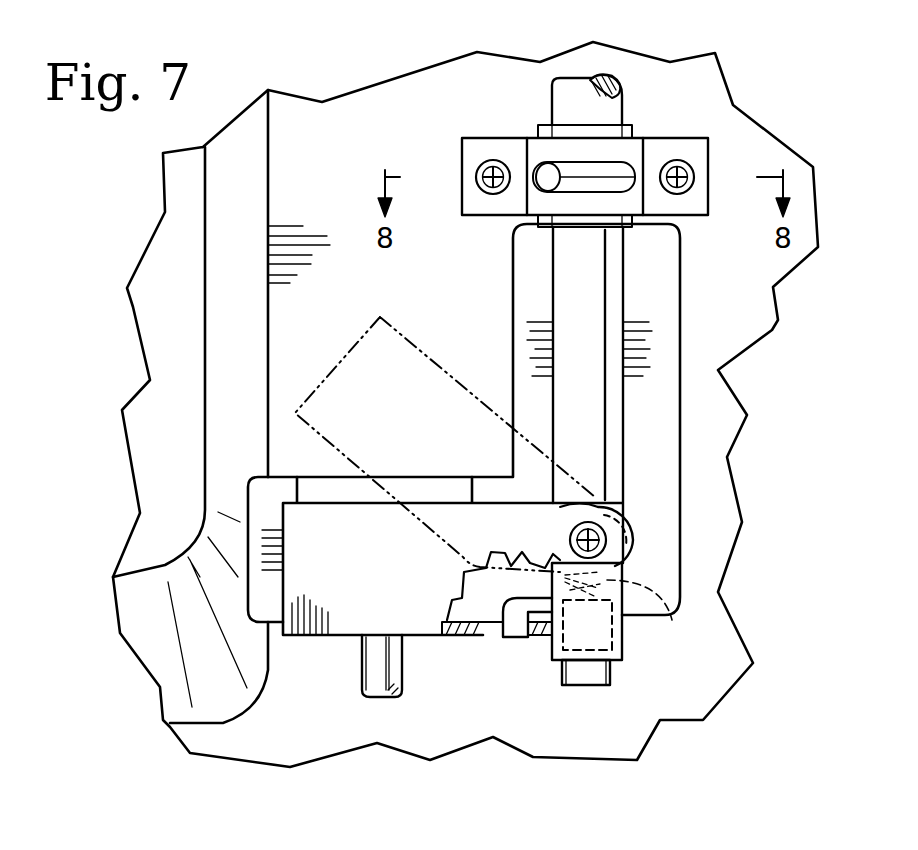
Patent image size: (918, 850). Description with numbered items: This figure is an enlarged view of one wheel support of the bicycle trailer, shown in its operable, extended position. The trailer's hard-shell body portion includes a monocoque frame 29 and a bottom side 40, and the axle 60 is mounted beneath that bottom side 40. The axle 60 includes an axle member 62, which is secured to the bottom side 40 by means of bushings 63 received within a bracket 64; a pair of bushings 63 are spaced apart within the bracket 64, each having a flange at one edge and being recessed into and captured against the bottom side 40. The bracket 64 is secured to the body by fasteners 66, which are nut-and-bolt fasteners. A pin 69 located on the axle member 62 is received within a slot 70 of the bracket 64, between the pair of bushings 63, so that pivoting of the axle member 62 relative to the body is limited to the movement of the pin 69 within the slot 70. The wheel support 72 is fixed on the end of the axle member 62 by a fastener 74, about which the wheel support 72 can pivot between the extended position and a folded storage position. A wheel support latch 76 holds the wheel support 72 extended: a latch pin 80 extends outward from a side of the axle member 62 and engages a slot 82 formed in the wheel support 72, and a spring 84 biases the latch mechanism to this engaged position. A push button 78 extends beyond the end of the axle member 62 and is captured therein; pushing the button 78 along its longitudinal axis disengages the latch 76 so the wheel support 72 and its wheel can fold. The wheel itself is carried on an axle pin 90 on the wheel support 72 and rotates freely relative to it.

The monocoque frame 29 is at (775, 300).
The bottom side 40 is at (337, 152).
The axle 60 is at (607, 144).
The axle member 62 is at (602, 78).
The bushings 63 is at (630, 132).
The bracket 64 is at (690, 156).
The fasteners 66 is at (490, 195).
The pin 69 is at (540, 176).
The slot 70 is at (600, 188).
The wheel support 72 is at (352, 588).
The fastener 74 is at (602, 525).
The wheel support latch 76 is at (636, 676).
The push button 78 is at (587, 687).
The latch pin 80 is at (523, 640).
The slot 82 is at (490, 637).
The spring 84 is at (672, 620).
The axle pin 90 is at (360, 653).